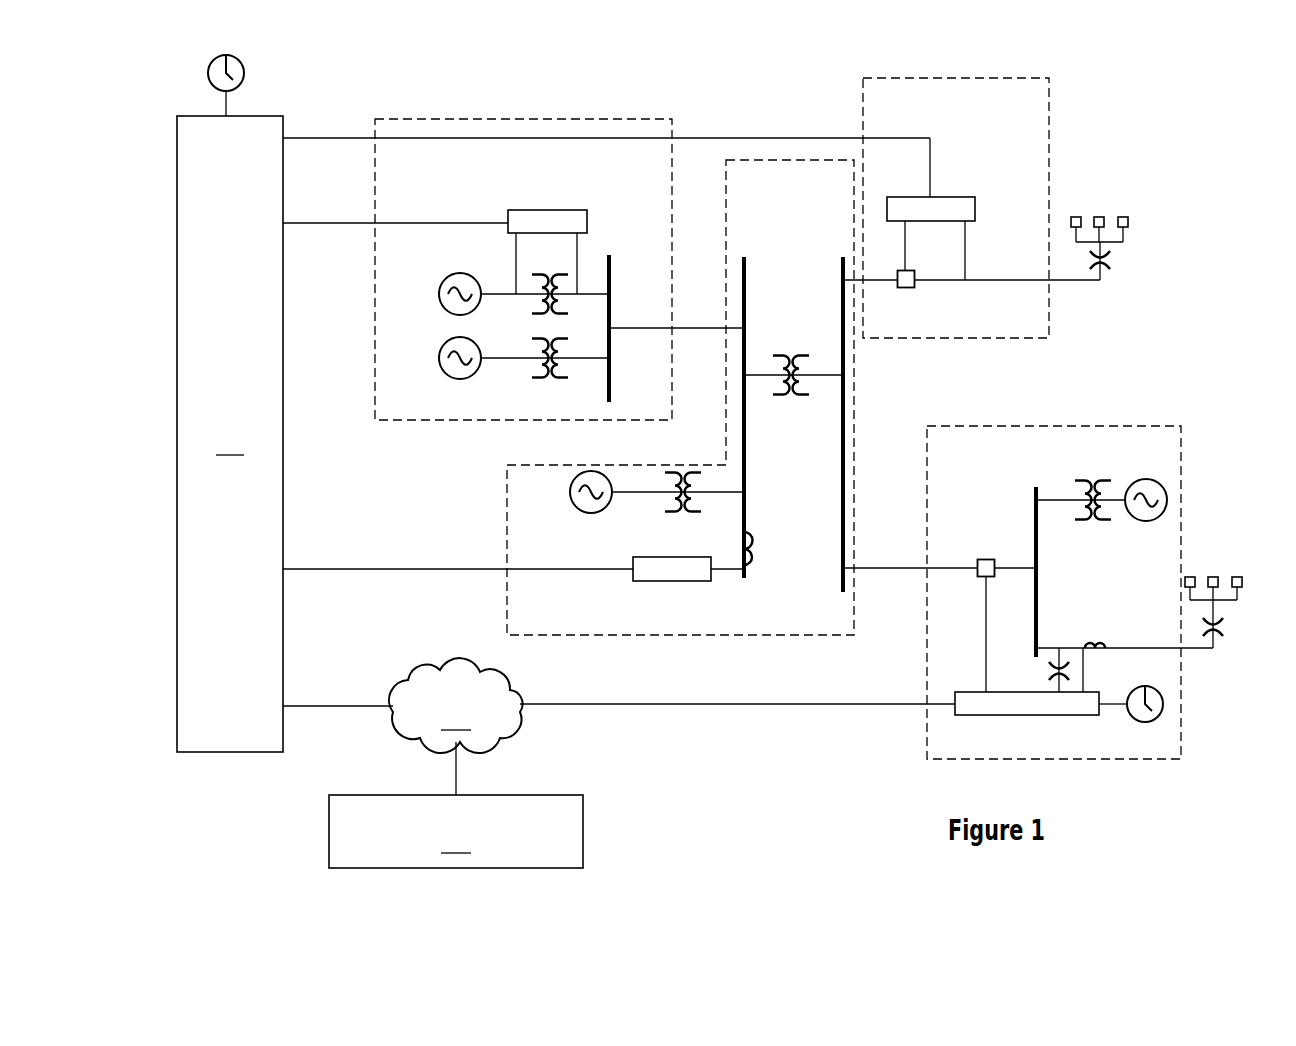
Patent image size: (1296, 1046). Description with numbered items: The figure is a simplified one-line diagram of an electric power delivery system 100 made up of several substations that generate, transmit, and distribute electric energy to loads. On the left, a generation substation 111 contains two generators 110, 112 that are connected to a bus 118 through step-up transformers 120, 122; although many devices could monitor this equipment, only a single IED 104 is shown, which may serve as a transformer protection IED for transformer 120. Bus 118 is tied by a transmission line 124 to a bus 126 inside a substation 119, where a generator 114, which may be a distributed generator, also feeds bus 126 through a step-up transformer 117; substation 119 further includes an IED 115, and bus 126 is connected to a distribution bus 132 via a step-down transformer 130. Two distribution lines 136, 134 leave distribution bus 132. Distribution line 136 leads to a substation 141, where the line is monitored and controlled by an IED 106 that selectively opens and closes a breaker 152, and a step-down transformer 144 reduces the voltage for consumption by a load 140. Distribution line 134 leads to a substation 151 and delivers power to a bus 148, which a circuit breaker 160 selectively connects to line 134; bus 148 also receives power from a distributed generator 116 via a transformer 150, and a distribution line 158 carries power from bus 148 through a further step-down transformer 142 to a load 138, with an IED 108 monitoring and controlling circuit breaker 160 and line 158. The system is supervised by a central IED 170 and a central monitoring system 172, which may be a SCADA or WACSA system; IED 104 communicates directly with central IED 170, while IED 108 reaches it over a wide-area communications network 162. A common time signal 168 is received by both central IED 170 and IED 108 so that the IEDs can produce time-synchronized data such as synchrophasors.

The electric power delivery system 100 is at (1160, 139).
The IED 104 is at (522, 210).
The IED 106 is at (900, 197).
The IED 108 is at (1070, 716).
The generator 110 is at (437, 290).
The generation substation 111 is at (465, 422).
The generator 112 is at (437, 354).
The generator 114 is at (571, 493).
The IED 115 is at (700, 557).
The distributed generator 116 is at (1145, 522).
The step-up transformer 117 is at (663, 505).
The bus 118 is at (614, 380).
The substation 119 is at (617, 637).
The step-up transformer 120 is at (530, 309).
The step-up transformer 122 is at (549, 380).
The transmission line 124 is at (688, 330).
The bus 126 is at (747, 426).
The step-down transformer 130 is at (792, 355).
The distribution bus 132 is at (840, 555).
The distribution line 134 is at (937, 570).
The distribution line 136 is at (878, 282).
The load 138 is at (1213, 577).
The load 140 is at (1132, 221).
The substation 141 is at (1024, 340).
The step-down transformer 142 is at (1225, 630).
The step-down transformer 144 is at (1112, 262).
The bus 148 is at (1034, 490).
The transformer 150 is at (1093, 481).
The substation 151 is at (1120, 761).
The breaker 152 is at (918, 290).
The distribution line 158 is at (1112, 645).
The circuit breaker 160 is at (982, 559).
The communications network 162 is at (456, 705).
The common time signal 168 is at (245, 72).
The central IED 170 is at (230, 434).
The central monitoring system 172 is at (456, 831).